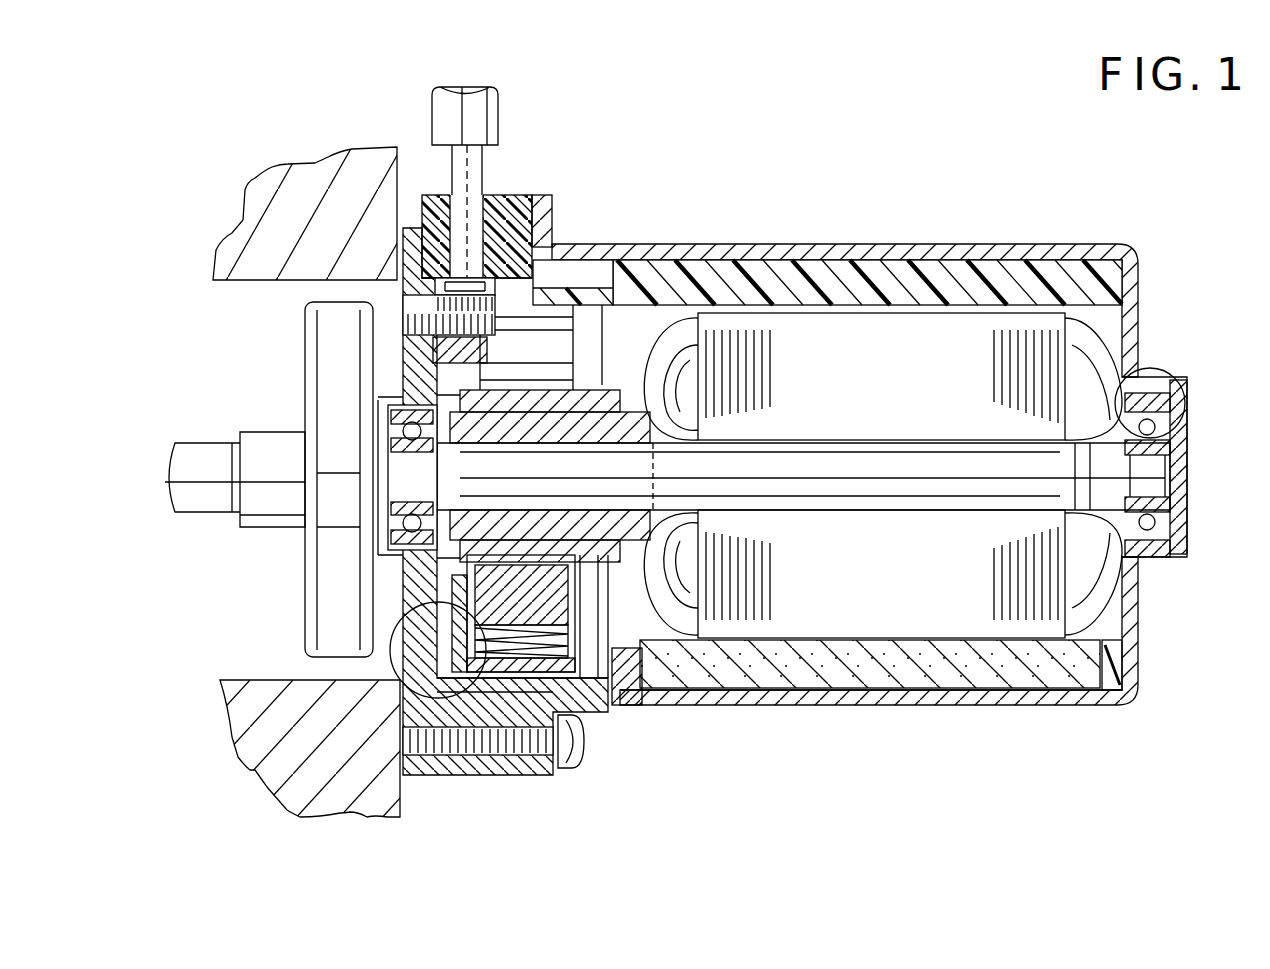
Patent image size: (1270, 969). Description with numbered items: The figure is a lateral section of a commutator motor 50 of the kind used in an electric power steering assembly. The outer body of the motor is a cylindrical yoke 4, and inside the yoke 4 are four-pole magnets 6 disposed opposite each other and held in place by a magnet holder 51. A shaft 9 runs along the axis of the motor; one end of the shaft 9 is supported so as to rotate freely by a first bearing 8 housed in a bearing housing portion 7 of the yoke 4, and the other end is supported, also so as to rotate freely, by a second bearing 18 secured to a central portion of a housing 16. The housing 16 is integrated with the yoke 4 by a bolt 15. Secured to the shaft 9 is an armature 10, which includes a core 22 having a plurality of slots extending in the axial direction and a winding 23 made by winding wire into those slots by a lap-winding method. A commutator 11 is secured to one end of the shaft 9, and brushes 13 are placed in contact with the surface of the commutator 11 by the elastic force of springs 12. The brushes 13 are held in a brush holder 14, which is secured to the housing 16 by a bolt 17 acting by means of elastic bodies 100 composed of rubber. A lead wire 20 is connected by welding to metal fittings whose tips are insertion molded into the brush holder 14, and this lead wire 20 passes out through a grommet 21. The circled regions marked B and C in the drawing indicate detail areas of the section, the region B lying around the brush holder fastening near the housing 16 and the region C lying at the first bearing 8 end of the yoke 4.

The commutator motor 50 is at (812, 126).
The yoke 4 is at (1053, 243).
The magnets 6 is at (798, 682).
The magnet holder 51 is at (923, 278).
The core 22 is at (975, 342).
The winding 23 is at (673, 335).
The armature 10 is at (937, 623).
The shaft 9 is at (873, 483).
The commutator 11 is at (583, 320).
The grommet 21 is at (505, 202).
The lead wire 20 is at (472, 172).
The bolt 17 is at (408, 305).
The elastic bodies 100 is at (427, 357).
The second bearing 18 is at (390, 413).
The detail region B is at (418, 700).
The housing 16 is at (445, 655).
The bolt 15 is at (460, 757).
The brushes 13 is at (550, 613).
The brush holder 14 is at (508, 663).
The springs 12 is at (578, 640).
The bearing housing portion 7 is at (1180, 547).
The first bearing 8 is at (1160, 537).
The detail region C is at (1167, 372).